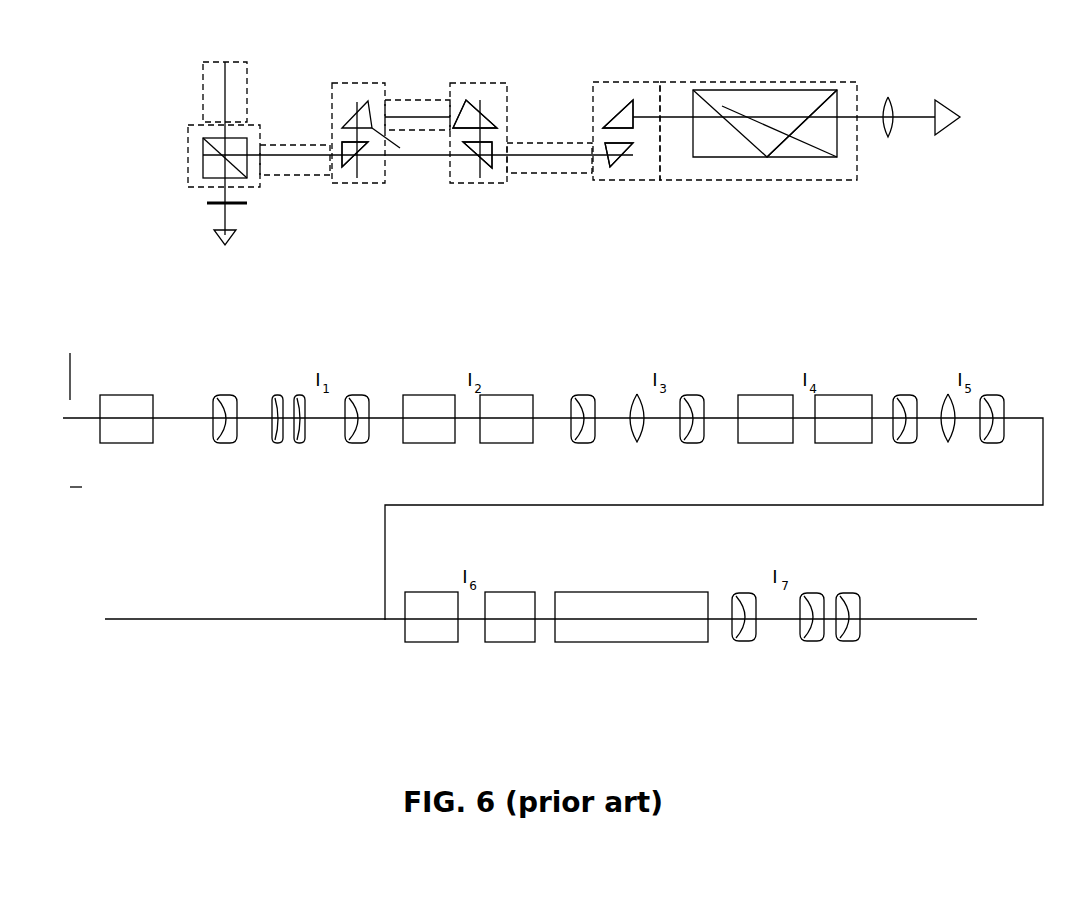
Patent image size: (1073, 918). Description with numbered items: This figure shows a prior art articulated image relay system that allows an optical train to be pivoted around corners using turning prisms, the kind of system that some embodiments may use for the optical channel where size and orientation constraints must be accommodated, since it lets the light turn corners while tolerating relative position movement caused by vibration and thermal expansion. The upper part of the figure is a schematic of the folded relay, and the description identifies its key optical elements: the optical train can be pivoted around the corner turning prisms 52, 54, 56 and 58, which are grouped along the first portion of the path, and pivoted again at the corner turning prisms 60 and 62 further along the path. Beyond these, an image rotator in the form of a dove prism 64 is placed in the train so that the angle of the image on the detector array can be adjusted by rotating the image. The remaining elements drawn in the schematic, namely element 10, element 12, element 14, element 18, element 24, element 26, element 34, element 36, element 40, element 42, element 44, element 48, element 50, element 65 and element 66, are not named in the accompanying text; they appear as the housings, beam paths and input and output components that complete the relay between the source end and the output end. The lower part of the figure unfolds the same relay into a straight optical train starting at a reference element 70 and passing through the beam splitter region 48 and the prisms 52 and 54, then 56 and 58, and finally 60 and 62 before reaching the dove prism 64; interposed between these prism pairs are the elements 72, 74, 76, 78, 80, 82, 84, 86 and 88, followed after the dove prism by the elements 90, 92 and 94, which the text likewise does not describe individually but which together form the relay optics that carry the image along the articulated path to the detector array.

The laser source 10 is at (240, 78).
The laser housing 12 is at (250, 126).
The mirror 14 is at (208, 205).
The beam tube 18 is at (308, 144).
The first prism module 24 is at (350, 83).
The coupling module 26 is at (416, 100).
The second prism module 34 is at (460, 83).
The beam tube 36 is at (552, 143).
The third prism module 40 is at (645, 84).
The beam expander module 42 is at (733, 88).
The lens 44 is at (888, 138).
The beam splitter 48 is at (247, 178).
The output beam 50 is at (228, 232).
The corner turning prism 52 is at (348, 172).
The corner turning prism 54 is at (375, 128).
The corner turning prism 56 is at (462, 108).
The corner turning prism 58 is at (480, 172).
The corner turning prism 60 is at (612, 170).
The corner turning prism 62 is at (635, 128).
The dove prism 64 is at (783, 158).
The prism 65 is at (728, 158).
The output beam 66 is at (942, 130).
The object plane 70 is at (70, 440).
The lens 72 is at (220, 446).
The lens pair 74 is at (290, 446).
The lens 76 is at (357, 446).
The lens 78 is at (583, 446).
The lens 80 is at (640, 445).
The lens 82 is at (692, 446).
The lens 84 is at (905, 446).
The lens 86 is at (948, 445).
The lens 88 is at (992, 446).
The lens 90 is at (745, 644).
The lens 92 is at (812, 644).
The lens 94 is at (850, 644).